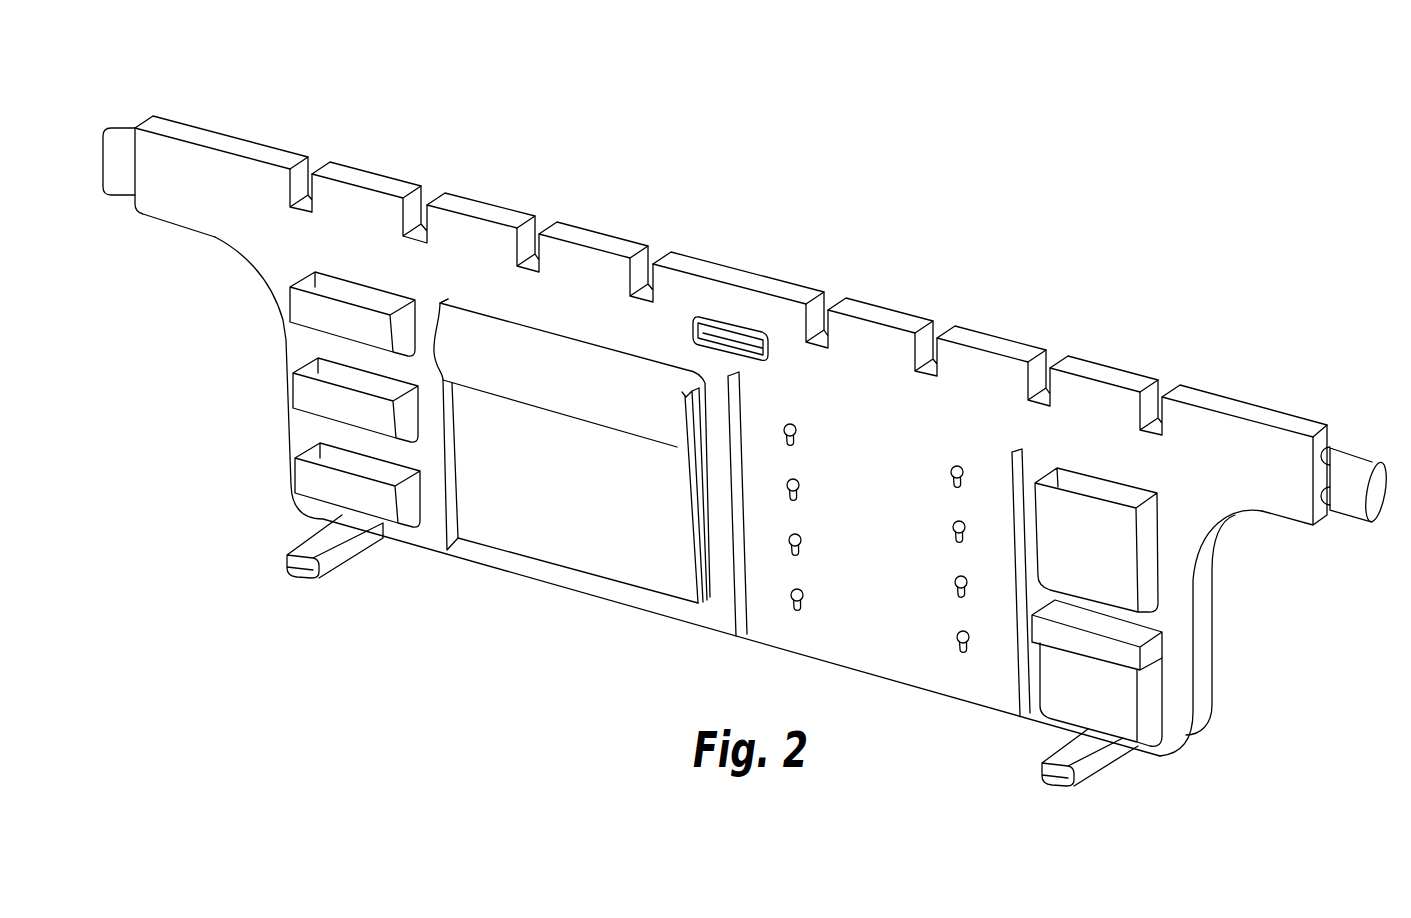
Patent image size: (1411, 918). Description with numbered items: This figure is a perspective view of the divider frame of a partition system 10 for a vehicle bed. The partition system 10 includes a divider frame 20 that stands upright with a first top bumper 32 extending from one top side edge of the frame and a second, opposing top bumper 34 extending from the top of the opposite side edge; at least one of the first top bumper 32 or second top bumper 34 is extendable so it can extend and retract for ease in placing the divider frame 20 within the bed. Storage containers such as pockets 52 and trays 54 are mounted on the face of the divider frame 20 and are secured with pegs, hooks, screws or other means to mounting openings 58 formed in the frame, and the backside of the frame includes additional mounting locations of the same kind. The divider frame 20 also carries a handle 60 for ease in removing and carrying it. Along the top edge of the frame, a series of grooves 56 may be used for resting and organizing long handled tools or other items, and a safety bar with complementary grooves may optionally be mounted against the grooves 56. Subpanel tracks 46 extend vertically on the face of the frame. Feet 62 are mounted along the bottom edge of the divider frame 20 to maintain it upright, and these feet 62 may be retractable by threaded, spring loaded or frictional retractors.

The partition system 10 is at (739, 202).
The divider frame 20 is at (900, 472).
The first top bumper 32 is at (1340, 447).
The second top bumper 34 is at (125, 128).
The subpanel tracks 46 is at (737, 597).
The pockets 52 is at (538, 350).
The trays 54 is at (347, 288).
The grooves 56 is at (305, 182).
The mounting openings 58 is at (953, 466).
The handle 60 is at (703, 332).
The feet 62 is at (303, 537).